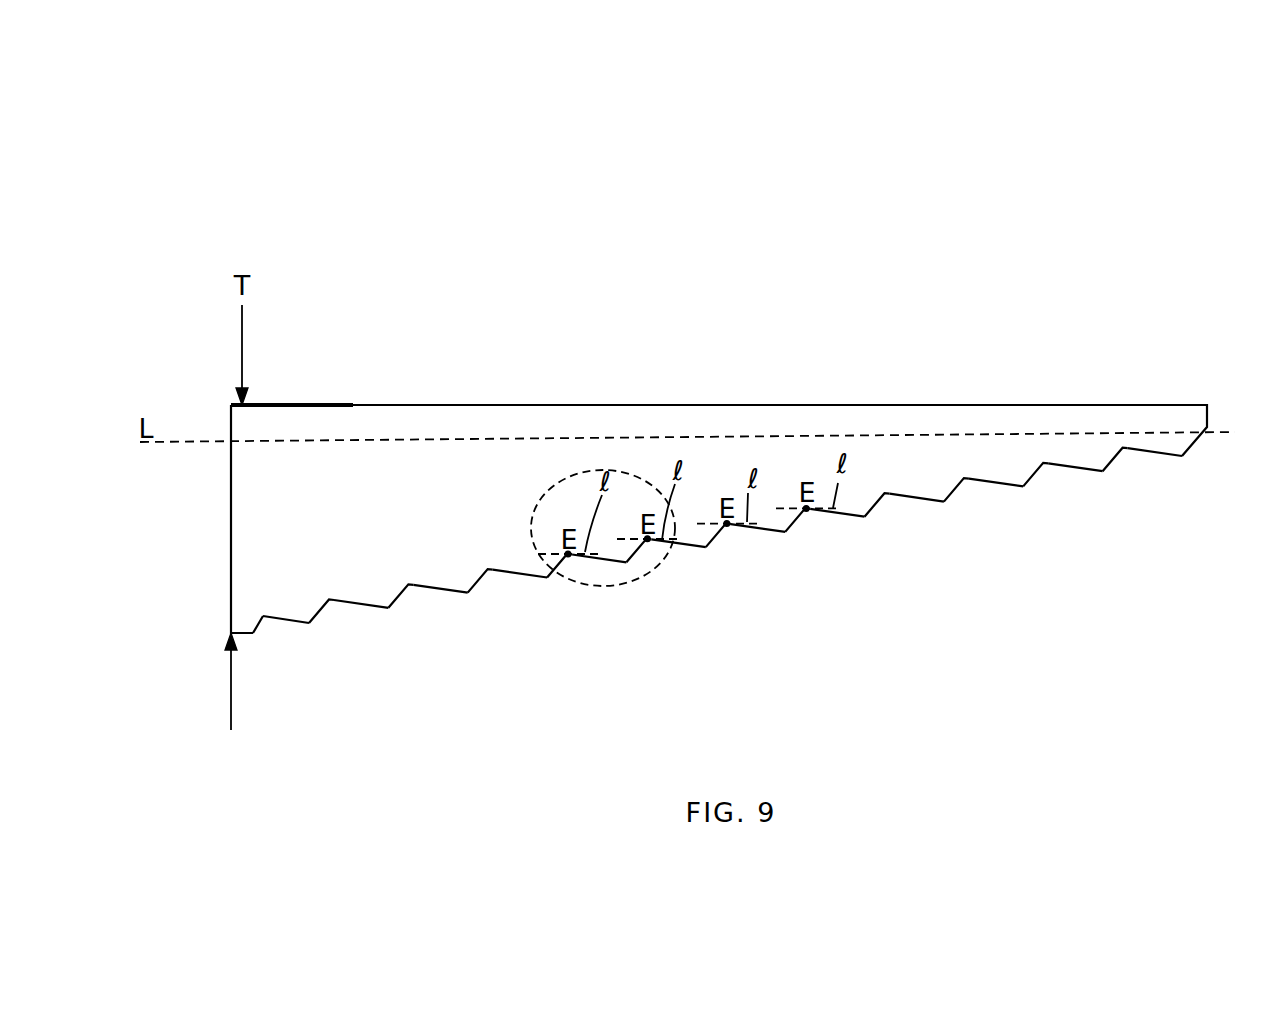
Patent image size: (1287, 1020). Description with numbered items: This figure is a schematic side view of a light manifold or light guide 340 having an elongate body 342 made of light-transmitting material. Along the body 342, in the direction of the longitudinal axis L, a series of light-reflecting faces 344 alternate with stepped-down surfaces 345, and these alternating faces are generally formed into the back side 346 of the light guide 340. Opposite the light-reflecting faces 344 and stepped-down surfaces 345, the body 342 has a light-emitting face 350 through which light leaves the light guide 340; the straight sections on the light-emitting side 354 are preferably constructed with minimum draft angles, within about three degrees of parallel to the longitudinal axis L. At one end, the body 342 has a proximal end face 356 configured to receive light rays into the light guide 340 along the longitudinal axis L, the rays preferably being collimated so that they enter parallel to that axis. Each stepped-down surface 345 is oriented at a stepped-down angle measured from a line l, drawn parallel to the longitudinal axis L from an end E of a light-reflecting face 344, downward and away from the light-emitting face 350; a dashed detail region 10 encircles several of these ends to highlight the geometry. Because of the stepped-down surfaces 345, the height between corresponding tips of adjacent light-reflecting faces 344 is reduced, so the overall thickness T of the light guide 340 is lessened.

The light guide 340 is at (378, 122).
The body 342 is at (548, 465).
The light-reflecting face 344 is at (258, 620).
The stepped-down surface 345 is at (275, 617).
The back side 346 is at (422, 587).
The light-emitting face 350 is at (430, 405).
The light-emitting side 354 is at (313, 405).
The proximal end face 356 is at (230, 520).
The detail region 10 is at (645, 575).